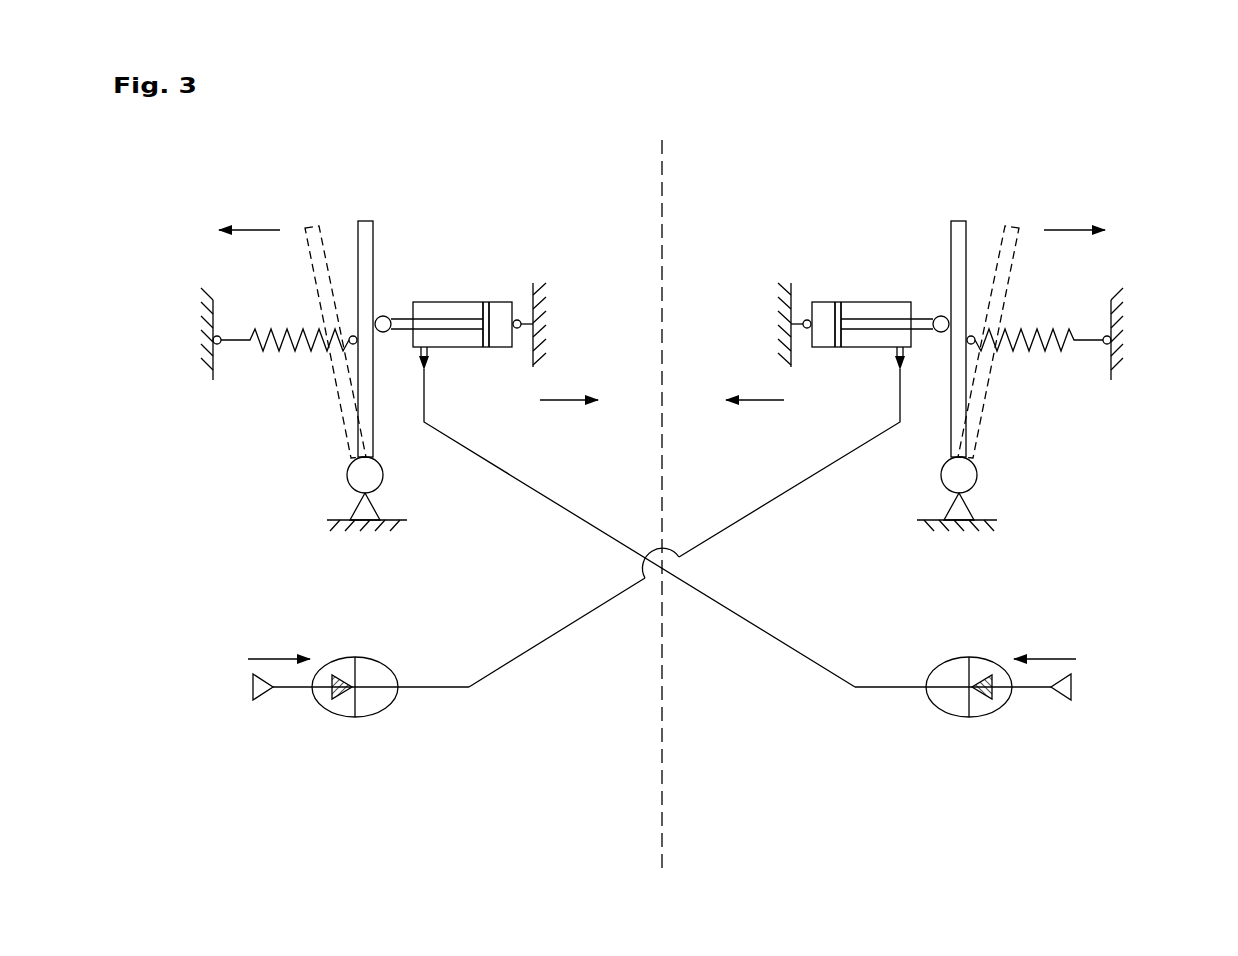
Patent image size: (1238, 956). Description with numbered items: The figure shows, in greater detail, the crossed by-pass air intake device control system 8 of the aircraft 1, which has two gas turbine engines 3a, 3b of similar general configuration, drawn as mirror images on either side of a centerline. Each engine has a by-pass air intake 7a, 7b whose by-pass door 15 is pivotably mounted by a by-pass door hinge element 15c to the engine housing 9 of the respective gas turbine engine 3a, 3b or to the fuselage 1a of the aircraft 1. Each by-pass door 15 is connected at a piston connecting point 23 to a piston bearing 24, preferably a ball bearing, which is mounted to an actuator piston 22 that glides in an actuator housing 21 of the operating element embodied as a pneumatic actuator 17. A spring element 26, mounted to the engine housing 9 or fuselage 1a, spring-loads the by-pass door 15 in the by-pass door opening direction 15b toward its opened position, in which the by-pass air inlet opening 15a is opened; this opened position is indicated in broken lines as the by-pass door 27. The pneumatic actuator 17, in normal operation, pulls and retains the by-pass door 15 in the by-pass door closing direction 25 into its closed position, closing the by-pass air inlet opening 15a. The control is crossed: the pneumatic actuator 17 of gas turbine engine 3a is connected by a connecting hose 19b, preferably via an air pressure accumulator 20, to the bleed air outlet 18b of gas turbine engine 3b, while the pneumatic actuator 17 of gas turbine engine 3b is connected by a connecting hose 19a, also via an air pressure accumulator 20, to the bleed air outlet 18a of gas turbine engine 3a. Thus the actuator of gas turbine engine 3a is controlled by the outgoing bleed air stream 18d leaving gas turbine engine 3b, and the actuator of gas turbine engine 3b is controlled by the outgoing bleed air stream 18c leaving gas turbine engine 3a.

The aircraft 1 is at (1157, 138).
The fuselage 1a is at (661, 440).
The gas turbine engine 3a is at (432, 838).
The gas turbine engine 3b is at (932, 838).
The by-pass air intake 7a is at (316, 410).
The by-pass air intake 7b is at (1008, 410).
The crossed by-pass air intake device control system 8 is at (949, 172).
The engine housing 9 is at (210, 350).
The by-pass door 15 is at (373, 230).
The by-pass air inlet opening 15a is at (347, 221).
The by-pass door opening direction 15b is at (256, 230).
The by-pass door hinge element 15c is at (346, 495).
The pneumatic actuator 17 is at (472, 302).
The bleed air outlet 18a is at (266, 701).
The bleed air outlet 18b is at (1060, 701).
The outgoing bleed air stream 18c is at (272, 659).
The outgoing bleed air stream 18d is at (1052, 659).
The connecting hose 19a is at (552, 640).
The connecting hose 19b is at (772, 640).
The air pressure accumulator 20 is at (388, 708).
The actuator housing 21 is at (479, 347).
The actuator piston 22 is at (443, 331).
The piston connecting point 23 is at (389, 314).
The piston bearing 24 is at (383, 333).
The by-pass door closing direction 25 is at (572, 404).
The spring element 26 is at (276, 352).
The by-pass door in opened position 27 is at (305, 258).